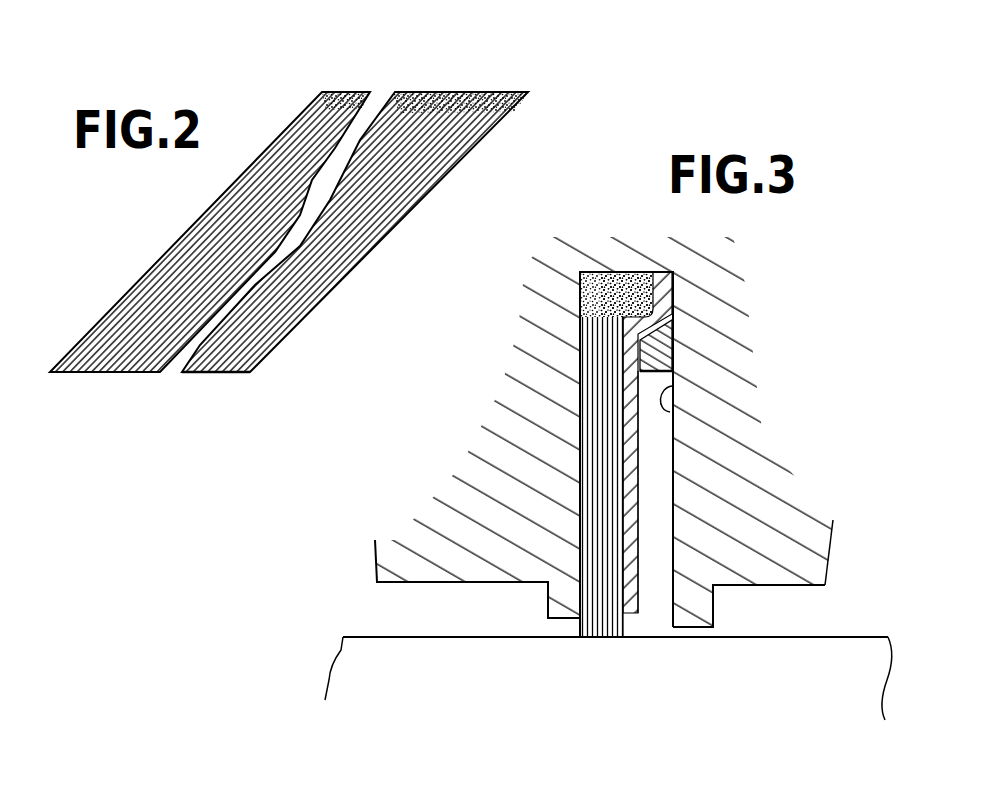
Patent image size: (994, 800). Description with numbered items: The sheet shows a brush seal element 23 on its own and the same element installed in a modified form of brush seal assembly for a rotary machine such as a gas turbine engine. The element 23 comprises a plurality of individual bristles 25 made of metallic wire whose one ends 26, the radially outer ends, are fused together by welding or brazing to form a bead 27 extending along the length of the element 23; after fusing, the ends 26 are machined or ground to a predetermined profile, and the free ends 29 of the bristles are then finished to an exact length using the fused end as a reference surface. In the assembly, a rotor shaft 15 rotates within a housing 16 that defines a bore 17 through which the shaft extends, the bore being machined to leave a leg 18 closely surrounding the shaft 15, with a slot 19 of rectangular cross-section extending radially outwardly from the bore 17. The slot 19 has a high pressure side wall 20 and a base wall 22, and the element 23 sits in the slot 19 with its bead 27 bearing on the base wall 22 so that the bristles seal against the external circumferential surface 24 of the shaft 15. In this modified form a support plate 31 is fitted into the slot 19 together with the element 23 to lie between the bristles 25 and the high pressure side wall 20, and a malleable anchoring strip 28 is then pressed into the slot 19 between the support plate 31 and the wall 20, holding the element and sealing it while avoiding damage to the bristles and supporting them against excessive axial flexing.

In FIG. 3, the rotor shaft 15 is at (763, 714).
In FIG. 3, the housing 16 is at (753, 503).
In FIG. 3, the bore 17 is at (772, 623).
In FIG. 3, the leg 18 is at (703, 580).
In FIG. 3, the slot 19 is at (690, 405).
In FIG. 3, the high pressure side wall 20 is at (665, 388).
In FIG. 3, the base wall 22 is at (588, 270).
In FIG. 2, the brush seal element 23 is at (181, 239).
In FIG. 3, the brush seal element 23 is at (600, 352).
In FIG. 3, the external circumferential surface 24 is at (403, 637).
In FIG. 2, the bristles 25 is at (118, 328).
In FIG. 2, the one ends 26 is at (318, 91).
In FIG. 2, the bead 27 is at (465, 105).
In FIG. 3, the bead 27 is at (655, 285).
In FIG. 3, the anchoring strip 28 is at (663, 352).
In FIG. 2, the free ends 29 is at (201, 374).
In FIG. 3, the free ends 29 is at (598, 637).
In FIG. 3, the support plate 31 is at (640, 440).